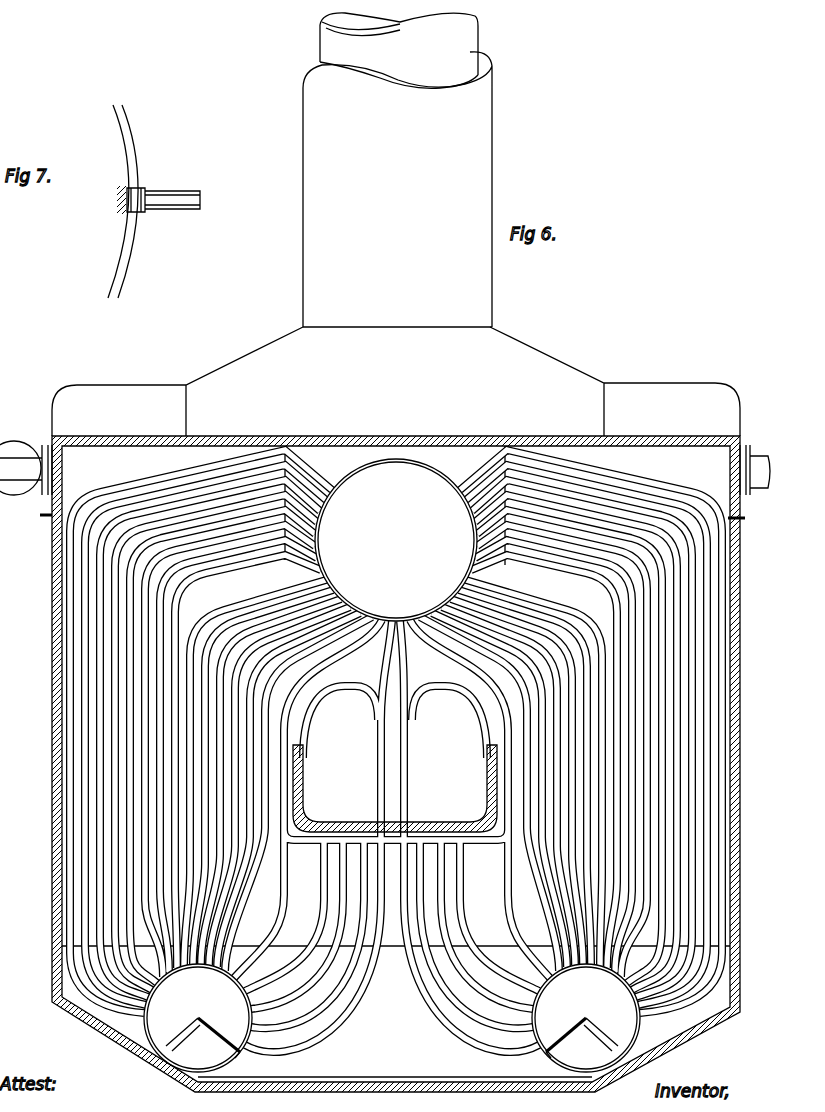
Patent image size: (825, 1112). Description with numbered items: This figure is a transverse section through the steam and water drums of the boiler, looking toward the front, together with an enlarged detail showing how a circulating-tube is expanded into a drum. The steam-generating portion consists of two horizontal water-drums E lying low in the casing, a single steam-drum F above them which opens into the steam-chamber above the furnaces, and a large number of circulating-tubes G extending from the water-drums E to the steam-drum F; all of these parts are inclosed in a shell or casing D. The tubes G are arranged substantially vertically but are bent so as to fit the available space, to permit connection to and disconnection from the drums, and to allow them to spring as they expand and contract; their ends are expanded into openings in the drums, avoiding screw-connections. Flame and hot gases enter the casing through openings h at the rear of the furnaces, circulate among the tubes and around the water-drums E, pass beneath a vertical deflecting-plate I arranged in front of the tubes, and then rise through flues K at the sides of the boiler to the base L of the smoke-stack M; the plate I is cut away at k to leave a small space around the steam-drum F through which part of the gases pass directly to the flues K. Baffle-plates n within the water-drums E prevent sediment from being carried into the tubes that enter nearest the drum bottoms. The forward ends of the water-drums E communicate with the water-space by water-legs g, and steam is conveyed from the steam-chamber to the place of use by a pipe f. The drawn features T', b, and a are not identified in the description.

In FIG. 6, the smoke-stack M is at (399, 50).
In FIG. 6, the base of the smoke-stack L is at (396, 381).
In FIG. 6, the top wall T' is at (468, 424).
In FIG. 6, the space around the steam-drum k is at (283, 478).
In FIG. 6, the water tubes b is at (136, 486).
In FIG. 6, the vertical deflecting-plate I is at (425, 736).
In FIG. 7, the steam-drum F is at (130, 178).
In FIG. 6, the steam-drum F is at (396, 540).
In FIG. 7, the circulating-tubes G is at (190, 195).
In FIG. 6, the openings h is at (387, 783).
In FIG. 6, the flues K is at (395, 788).
In FIG. 6, the water-drums E is at (178, 1040).
In FIG. 6, the baffle-plates n is at (392, 1035).
In FIG. 6, the shell or casing D is at (50, 740).
In FIG. 6, the pipe f is at (385, 479).
In FIG. 6, the water-legs g is at (396, 1011).
In FIG. 6, the floor plate a is at (420, 1080).